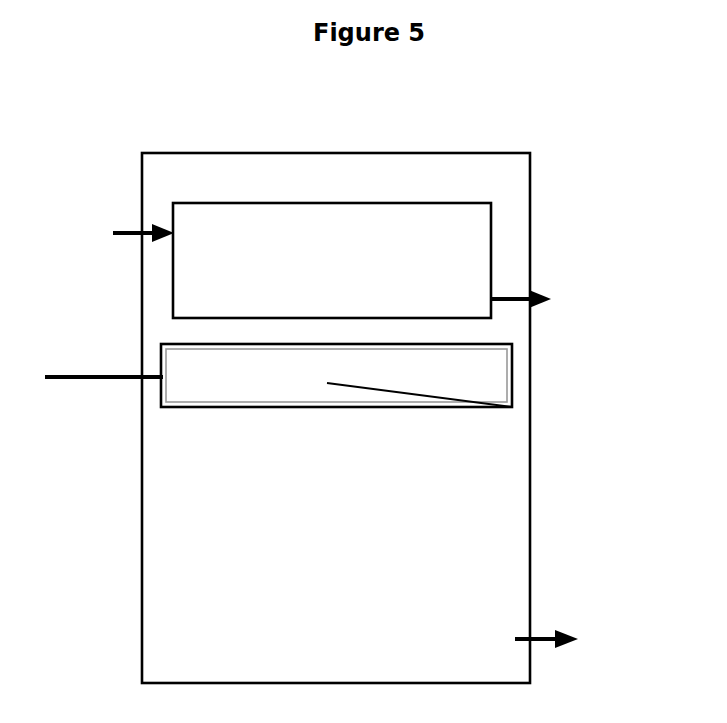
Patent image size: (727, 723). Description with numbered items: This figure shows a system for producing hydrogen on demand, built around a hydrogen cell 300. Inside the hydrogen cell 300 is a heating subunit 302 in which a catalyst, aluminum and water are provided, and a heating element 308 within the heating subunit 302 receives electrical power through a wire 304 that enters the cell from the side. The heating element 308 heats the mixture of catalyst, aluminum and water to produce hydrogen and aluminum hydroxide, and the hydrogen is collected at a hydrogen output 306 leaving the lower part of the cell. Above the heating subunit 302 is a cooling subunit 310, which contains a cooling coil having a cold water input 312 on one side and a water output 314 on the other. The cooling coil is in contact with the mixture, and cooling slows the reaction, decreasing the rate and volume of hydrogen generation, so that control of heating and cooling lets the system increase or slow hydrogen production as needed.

The hydrogen cell 300 is at (235, 152).
The heating subunit 302 is at (512, 362).
The wire 304 is at (55, 375).
The hydrogen output 306 is at (558, 627).
The heating element 308 is at (512, 407).
The cooling subunit 310 is at (313, 203).
The cold water input 312 is at (115, 231).
The water output 314 is at (537, 293).